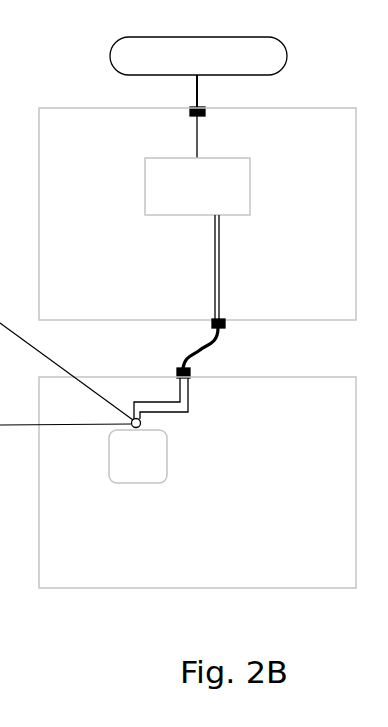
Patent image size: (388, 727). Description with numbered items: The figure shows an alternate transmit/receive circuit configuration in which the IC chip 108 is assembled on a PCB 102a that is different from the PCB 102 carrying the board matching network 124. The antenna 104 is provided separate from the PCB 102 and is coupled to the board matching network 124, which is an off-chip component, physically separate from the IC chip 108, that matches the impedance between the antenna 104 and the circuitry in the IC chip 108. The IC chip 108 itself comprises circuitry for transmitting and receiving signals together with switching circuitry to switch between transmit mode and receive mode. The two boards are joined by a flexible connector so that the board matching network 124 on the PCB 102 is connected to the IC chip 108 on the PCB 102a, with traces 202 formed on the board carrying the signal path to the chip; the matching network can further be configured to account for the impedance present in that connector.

The antenna 104 is at (198, 56).
The printed circuit board 102 is at (331, 154).
The board matching network 124 is at (182, 196).
The traces 202 is at (225, 331).
The PCB 102a is at (197, 482).
The IC chip 108 is at (123, 466).